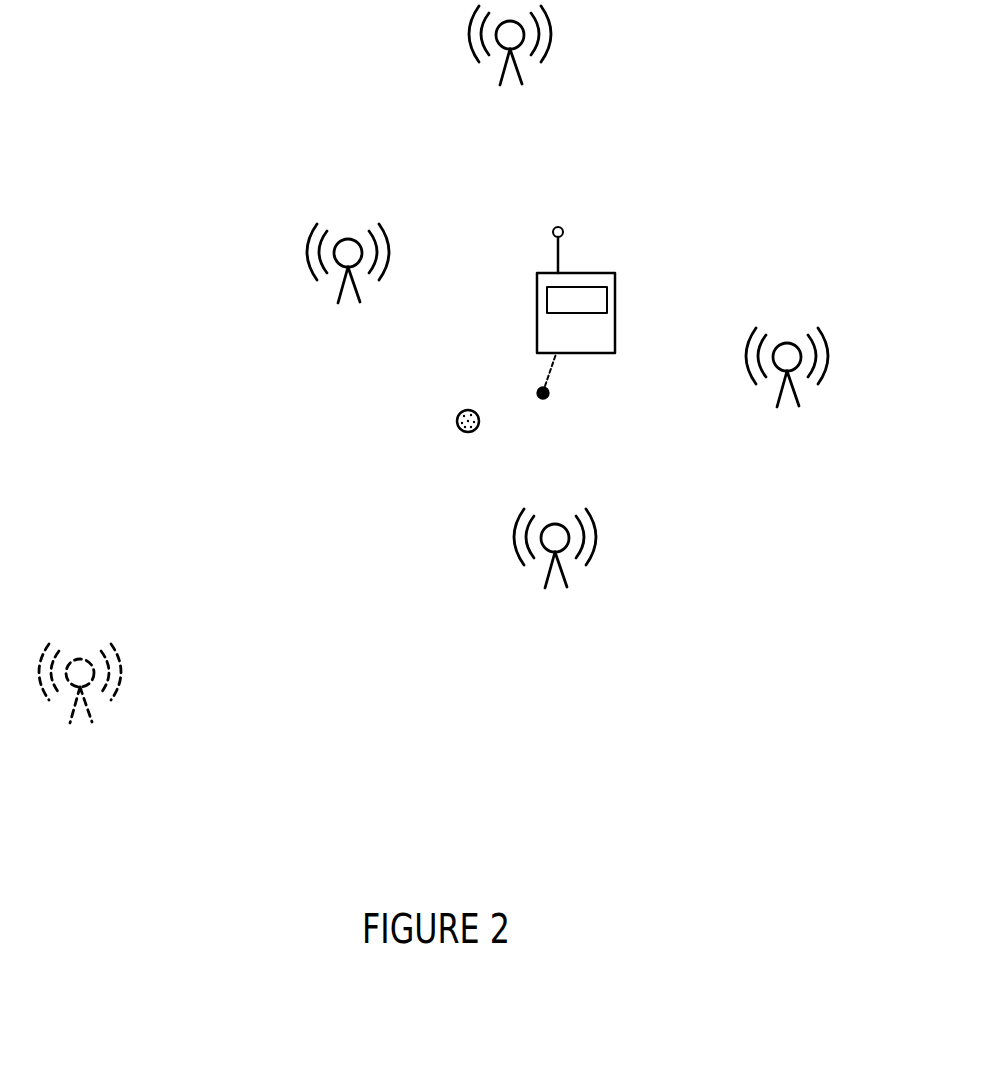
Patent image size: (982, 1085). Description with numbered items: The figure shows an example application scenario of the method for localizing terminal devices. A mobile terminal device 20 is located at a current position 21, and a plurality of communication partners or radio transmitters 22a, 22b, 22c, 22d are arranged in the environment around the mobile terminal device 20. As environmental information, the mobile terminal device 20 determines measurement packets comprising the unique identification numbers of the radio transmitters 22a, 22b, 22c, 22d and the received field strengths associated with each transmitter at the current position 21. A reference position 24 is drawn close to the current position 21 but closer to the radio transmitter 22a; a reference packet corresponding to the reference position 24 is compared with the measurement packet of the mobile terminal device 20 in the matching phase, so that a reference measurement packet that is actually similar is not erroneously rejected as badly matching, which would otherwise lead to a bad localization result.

The mobile terminal device 20 is at (615, 278).
The current position 21 is at (550, 395).
The radio transmitter 22a is at (565, 584).
The radio transmitter 22b is at (797, 403).
The radio transmitter 22c is at (520, 81).
The radio transmitter 22d is at (358, 299).
The reference position 24 is at (458, 429).